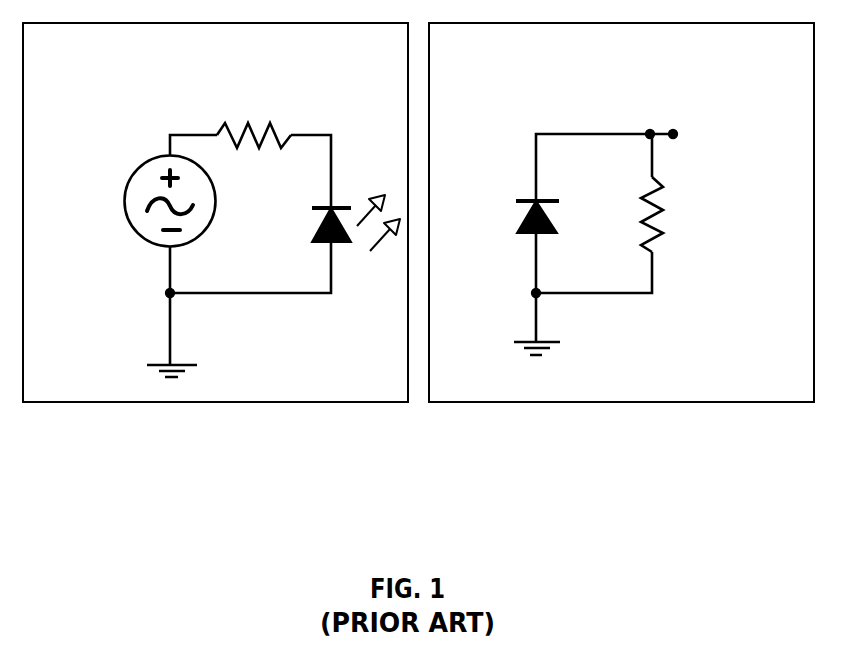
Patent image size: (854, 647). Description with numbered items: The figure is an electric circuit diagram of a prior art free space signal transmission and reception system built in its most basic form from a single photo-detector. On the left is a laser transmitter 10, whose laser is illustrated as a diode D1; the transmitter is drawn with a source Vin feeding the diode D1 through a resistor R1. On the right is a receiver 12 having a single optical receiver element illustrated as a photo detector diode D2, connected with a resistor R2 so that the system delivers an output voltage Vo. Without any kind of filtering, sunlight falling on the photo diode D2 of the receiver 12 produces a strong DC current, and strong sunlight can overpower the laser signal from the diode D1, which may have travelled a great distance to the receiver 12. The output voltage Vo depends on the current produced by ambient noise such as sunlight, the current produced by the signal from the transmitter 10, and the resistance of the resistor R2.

The laser transmitter 10 is at (215, 282).
The receiver 12 is at (621, 281).
The resistor R1 is at (254, 111).
The input voltage source Vin is at (152, 194).
The diode D1 is at (336, 223).
The output voltage Vo is at (701, 129).
The resistor R2 is at (674, 214).
The photo detector diode D2 is at (512, 217).